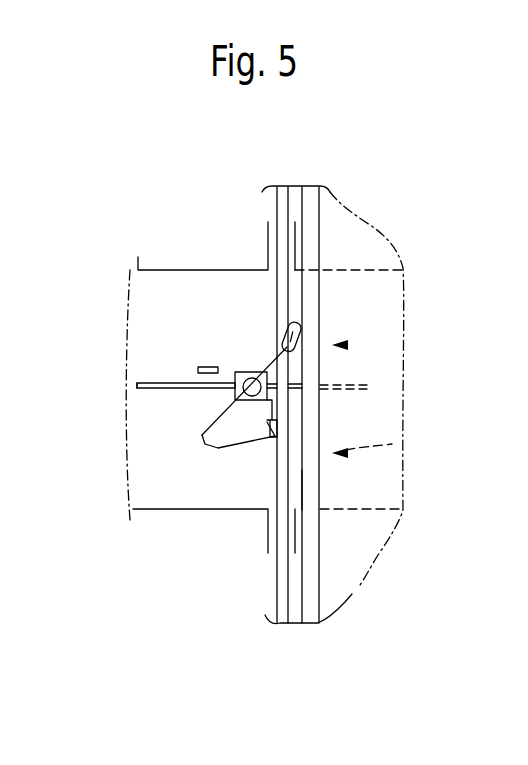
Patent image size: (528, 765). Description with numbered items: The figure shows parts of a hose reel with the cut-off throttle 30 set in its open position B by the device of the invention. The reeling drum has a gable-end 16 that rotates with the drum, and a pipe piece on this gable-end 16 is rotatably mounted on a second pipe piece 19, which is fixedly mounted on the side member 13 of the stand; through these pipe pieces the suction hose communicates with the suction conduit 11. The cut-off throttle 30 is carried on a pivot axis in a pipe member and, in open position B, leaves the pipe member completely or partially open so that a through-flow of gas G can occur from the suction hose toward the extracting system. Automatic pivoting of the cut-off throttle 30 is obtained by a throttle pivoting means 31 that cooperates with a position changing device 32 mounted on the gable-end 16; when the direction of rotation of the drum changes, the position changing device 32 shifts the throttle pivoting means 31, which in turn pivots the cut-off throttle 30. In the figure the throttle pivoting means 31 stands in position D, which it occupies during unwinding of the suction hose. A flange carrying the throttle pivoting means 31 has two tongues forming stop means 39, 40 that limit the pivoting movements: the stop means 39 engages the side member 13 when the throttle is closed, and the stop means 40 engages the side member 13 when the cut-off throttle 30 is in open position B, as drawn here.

The suction conduit 11 is at (150, 468).
The side member 13 is at (277, 598).
The gable-end 16 is at (302, 595).
The second pipe piece 19 is at (357, 270).
The cut-off throttle 30 is at (177, 403).
The throttle pivoting means 31 is at (279, 310).
The position changing device 32 is at (325, 488).
The stop means 39 is at (203, 367).
The stop means 40 is at (255, 450).
The open position B is at (153, 383).
The position D is at (268, 370).
The through-flow of gas G is at (346, 346).